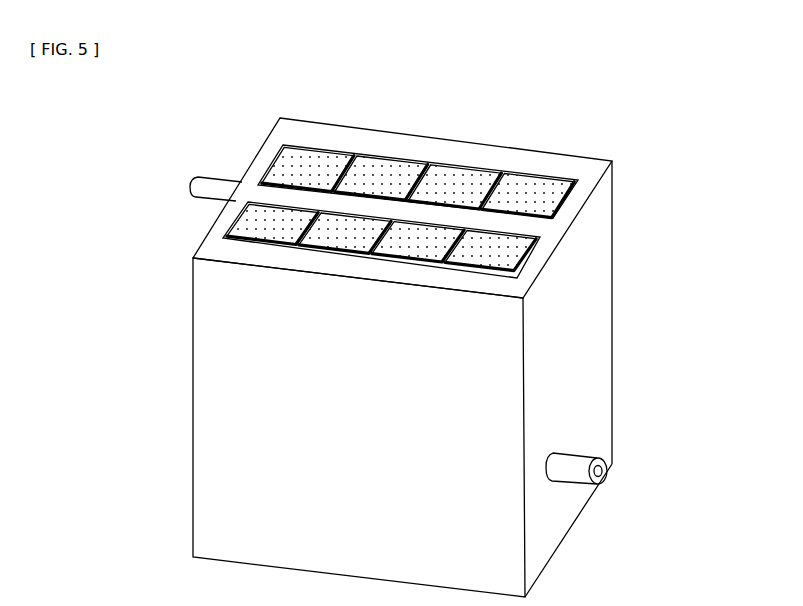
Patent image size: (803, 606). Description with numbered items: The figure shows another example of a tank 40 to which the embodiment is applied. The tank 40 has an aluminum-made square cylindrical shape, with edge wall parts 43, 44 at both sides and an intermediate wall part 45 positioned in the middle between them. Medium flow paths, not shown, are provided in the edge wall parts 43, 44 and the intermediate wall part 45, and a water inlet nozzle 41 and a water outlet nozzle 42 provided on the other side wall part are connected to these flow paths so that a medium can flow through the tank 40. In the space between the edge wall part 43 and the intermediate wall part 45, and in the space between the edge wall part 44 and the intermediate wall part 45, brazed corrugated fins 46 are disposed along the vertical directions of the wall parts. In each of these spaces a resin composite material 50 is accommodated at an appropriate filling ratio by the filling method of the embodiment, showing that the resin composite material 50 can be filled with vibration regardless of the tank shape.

The tank 40 is at (397, 335).
The water inlet nozzle 41 is at (582, 485).
The water outlet nozzle 42 is at (220, 178).
The edge wall part 43 is at (518, 165).
The edge wall part 44 is at (255, 257).
The intermediate wall part 45 is at (540, 229).
The corrugated fins 46 is at (440, 187).
The resin composite material 50 is at (390, 168).